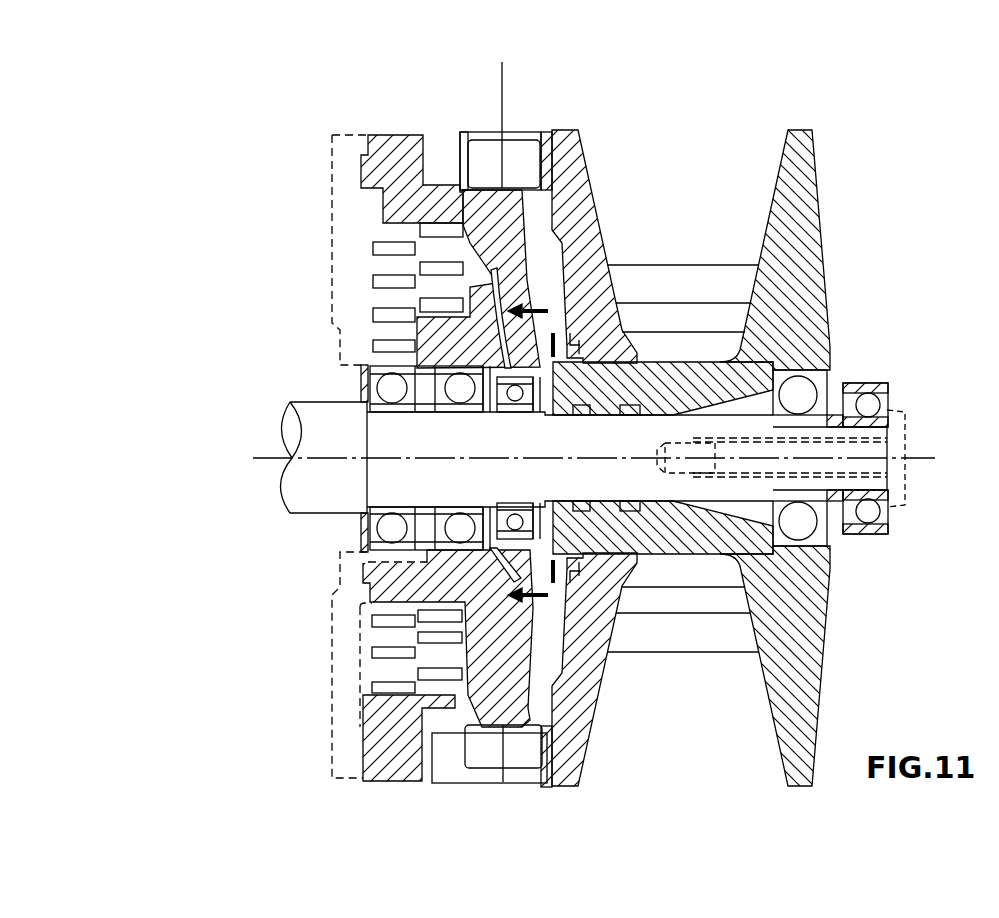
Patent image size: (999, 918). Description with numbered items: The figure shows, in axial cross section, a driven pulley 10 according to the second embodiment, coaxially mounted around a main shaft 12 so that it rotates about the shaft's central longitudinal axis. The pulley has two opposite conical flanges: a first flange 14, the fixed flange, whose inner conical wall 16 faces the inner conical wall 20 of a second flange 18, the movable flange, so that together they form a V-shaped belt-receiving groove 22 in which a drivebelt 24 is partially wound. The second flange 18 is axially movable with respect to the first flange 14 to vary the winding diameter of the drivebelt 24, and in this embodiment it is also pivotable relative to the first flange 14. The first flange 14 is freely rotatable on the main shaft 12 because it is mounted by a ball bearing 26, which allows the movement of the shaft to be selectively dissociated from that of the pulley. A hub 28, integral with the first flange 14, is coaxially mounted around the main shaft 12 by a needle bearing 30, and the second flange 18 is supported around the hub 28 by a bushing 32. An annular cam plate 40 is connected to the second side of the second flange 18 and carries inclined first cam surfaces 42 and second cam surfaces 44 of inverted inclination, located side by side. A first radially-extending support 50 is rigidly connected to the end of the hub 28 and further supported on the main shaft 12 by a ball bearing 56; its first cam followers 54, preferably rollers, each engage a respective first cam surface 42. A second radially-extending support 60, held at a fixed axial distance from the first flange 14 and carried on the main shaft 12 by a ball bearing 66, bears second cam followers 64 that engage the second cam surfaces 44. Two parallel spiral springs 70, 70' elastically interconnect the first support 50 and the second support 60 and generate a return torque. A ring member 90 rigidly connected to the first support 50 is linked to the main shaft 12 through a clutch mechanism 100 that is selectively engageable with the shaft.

The driven pulley 10 is at (312, 125).
The main shaft 12 is at (302, 483).
The first flange 14 is at (802, 790).
The inner conical wall 16 is at (778, 762).
The second flange 18 is at (565, 788).
The inner conical wall 20 is at (590, 725).
The belt-receiving groove 22 is at (700, 172).
The drivebelt 24 is at (667, 283).
The ball bearing 26 is at (807, 397).
The hub 28 is at (697, 382).
The needle bearing 30 is at (668, 362).
The bushing 32 is at (621, 372).
The annular cam plate 40 is at (500, 114).
The first cam surface 42 is at (532, 137).
The second cam surface 44 is at (443, 773).
The first radially-extending support 50 is at (473, 217).
The first cam followers 54 is at (474, 138).
The ball bearing 56 is at (507, 523).
The second radially-extending support 60 is at (397, 592).
The second cam followers 64 is at (477, 750).
The ball bearing 66 is at (457, 392).
The spiral spring 70 is at (356, 458).
The spiral spring 70' is at (359, 700).
The ring member 90 is at (393, 768).
The clutch mechanism 100 is at (347, 760).